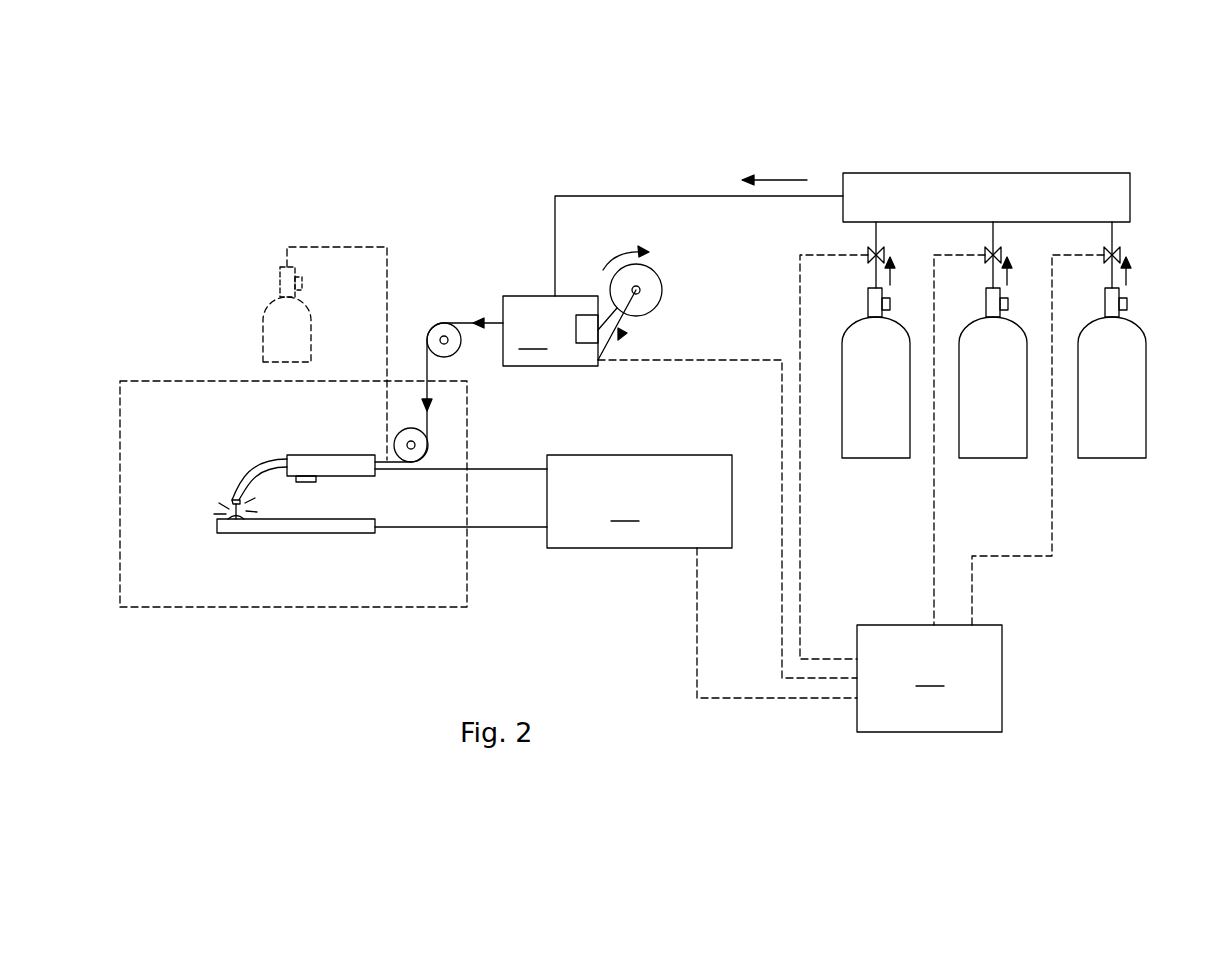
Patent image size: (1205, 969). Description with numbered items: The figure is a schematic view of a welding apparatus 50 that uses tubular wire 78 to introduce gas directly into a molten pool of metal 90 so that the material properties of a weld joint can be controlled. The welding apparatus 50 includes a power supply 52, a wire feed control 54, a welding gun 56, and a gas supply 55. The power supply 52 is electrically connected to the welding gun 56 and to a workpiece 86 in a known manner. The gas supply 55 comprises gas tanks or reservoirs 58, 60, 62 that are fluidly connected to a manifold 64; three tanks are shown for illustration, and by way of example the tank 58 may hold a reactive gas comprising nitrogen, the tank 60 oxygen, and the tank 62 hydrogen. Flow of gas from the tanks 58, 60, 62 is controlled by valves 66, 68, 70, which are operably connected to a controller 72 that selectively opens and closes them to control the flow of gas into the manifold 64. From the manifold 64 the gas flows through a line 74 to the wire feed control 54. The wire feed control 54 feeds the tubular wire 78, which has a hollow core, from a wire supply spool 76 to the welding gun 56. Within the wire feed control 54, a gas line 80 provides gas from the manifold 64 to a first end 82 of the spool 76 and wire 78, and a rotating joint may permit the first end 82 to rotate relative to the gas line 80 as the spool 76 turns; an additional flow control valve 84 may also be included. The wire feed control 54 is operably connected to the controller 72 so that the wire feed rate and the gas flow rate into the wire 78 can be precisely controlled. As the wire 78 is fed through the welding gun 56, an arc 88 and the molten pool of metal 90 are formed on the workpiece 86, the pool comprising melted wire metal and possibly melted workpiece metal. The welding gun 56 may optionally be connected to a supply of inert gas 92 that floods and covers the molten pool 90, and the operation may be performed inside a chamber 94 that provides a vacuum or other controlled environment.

The welding apparatus 50 is at (380, 208).
The power supply 52 is at (702, 576).
The wire feed control 54 is at (680, 487).
The gas supply 55 is at (965, 148).
The welding gun 56 is at (348, 452).
The gas tank 58 is at (872, 449).
The gas tank 60 is at (985, 450).
The gas tank 62 is at (1110, 450).
The manifold 64 is at (1037, 185).
The valve 66 is at (884, 255).
The valve 68 is at (1001, 255).
The valve 70 is at (1120, 255).
The controller 72 is at (952, 493).
The line 74 is at (678, 196).
The wire supply spool 76 is at (660, 282).
The tubular wire 78 is at (461, 323).
The gas line 80 is at (606, 318).
The first end 82 is at (647, 293).
The flow control valve 84 is at (592, 343).
The workpiece 86 is at (360, 535).
The arc 88 is at (210, 504).
The molten pool of metal 90 is at (222, 516).
The supply of inert gas 92 is at (262, 335).
The chamber 94 is at (333, 610).